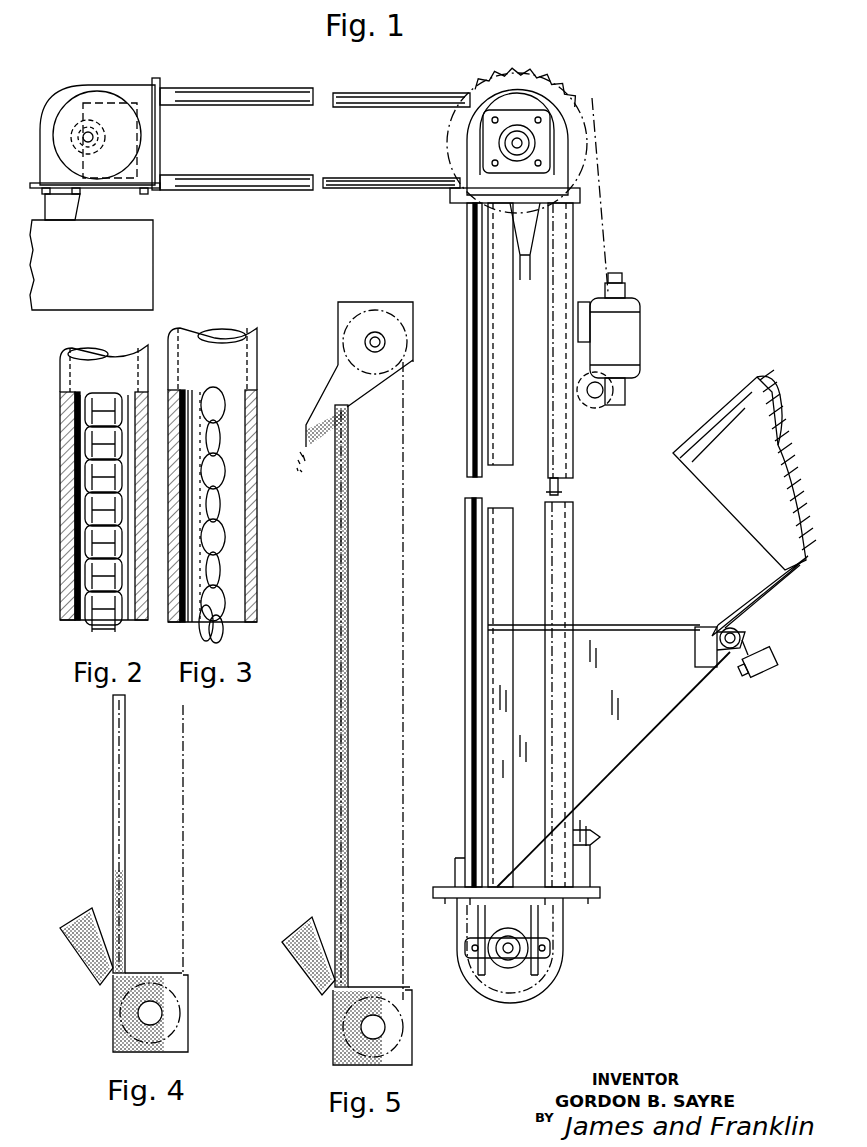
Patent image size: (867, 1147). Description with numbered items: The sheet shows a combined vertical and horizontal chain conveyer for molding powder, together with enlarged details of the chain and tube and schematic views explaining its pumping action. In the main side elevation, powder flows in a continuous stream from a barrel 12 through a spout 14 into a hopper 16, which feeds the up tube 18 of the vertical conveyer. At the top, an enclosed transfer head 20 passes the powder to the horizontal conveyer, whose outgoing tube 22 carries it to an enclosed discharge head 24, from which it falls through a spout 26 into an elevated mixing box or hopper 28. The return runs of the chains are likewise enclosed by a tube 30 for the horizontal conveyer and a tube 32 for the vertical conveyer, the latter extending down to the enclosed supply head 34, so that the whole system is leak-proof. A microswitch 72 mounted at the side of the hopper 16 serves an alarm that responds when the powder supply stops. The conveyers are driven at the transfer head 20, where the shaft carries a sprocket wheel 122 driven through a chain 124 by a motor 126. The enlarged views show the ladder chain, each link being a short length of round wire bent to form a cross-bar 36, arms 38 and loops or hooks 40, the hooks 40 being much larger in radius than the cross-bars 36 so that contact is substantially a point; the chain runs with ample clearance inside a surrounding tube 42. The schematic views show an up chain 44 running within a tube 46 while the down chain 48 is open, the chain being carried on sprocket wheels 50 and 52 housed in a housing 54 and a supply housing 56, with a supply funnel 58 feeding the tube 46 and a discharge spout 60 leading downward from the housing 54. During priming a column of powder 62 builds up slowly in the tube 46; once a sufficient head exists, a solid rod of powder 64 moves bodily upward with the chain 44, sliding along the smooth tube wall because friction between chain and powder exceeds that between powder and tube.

In FIG. 1, the barrel 12 is at (700, 425).
In FIG. 1, the spout 14 is at (745, 587).
In FIG. 1, the hopper 16 is at (635, 735).
In FIG. 1, the up tube 18 is at (466, 572).
In FIG. 1, the transfer head 20 is at (570, 148).
In FIG. 1, the outgoing tube 22 is at (380, 196).
In FIG. 1, the discharge head 24 is at (65, 92).
In FIG. 1, the spout 26 is at (82, 215).
In FIG. 1, the mixing box 28 is at (140, 253).
In FIG. 1, the tube 30 is at (385, 93).
In FIG. 1, the tube 32 is at (565, 482).
In FIG. 1, the supply head 34 is at (563, 940).
In FIG. 2, the cross-bar 36 is at (105, 625).
In FIG. 3, the cross-bar 36 is at (222, 626).
In FIG. 2, the arms 38 is at (78, 604).
In FIG. 3, the arms 38 is at (235, 600).
In FIG. 2, the loops or hooks 40 is at (88, 575).
In FIG. 3, the loops or hooks 40 is at (225, 575).
In FIG. 2, the tube 42 is at (60, 505).
In FIG. 3, the tube 42 is at (262, 414).
In FIG. 4, the up chain 44 is at (126, 714).
In FIG. 5, the up chain 44 is at (334, 860).
In FIG. 4, the tube 46 is at (112, 722).
In FIG. 5, the tube 46 is at (334, 800).
In FIG. 4, the down chain 48 is at (184, 892).
In FIG. 5, the down chain 48 is at (404, 800).
In FIG. 5, the sprocket wheel 50 is at (378, 306).
In FIG. 4, the sprocket wheel 52 is at (175, 1000).
In FIG. 5, the sprocket wheel 52 is at (400, 1014).
In FIG. 5, the housing 54 is at (414, 318).
In FIG. 4, the supply housing 56 is at (190, 1021).
In FIG. 5, the supply housing 56 is at (413, 1034).
In FIG. 4, the supply funnel 58 is at (65, 945).
In FIG. 5, the supply funnel 58 is at (285, 945).
In FIG. 5, the discharge spout 60 is at (315, 452).
In FIG. 4, the column of powder 62 is at (124, 909).
In FIG. 5, the rod of powder 64 is at (335, 610).
In FIG. 1, the microswitch 72 is at (706, 660).
In FIG. 1, the sprocket wheel 122 is at (572, 95).
In FIG. 1, the chain 124 is at (548, 340).
In FIG. 1, the motor 126 is at (642, 325).